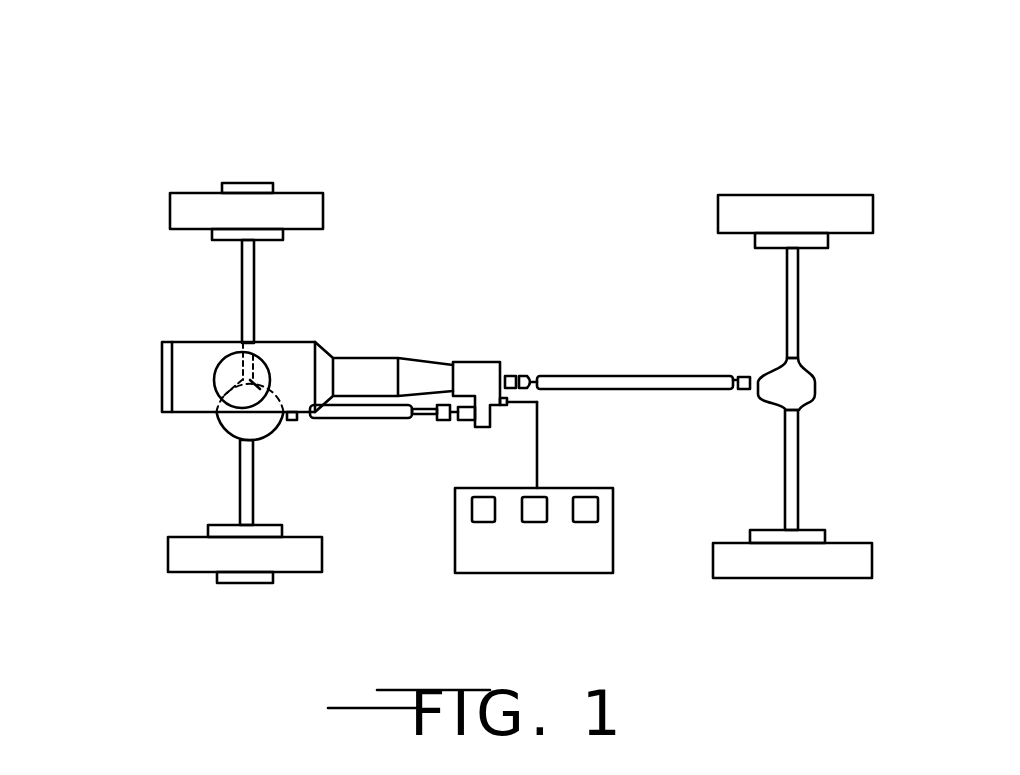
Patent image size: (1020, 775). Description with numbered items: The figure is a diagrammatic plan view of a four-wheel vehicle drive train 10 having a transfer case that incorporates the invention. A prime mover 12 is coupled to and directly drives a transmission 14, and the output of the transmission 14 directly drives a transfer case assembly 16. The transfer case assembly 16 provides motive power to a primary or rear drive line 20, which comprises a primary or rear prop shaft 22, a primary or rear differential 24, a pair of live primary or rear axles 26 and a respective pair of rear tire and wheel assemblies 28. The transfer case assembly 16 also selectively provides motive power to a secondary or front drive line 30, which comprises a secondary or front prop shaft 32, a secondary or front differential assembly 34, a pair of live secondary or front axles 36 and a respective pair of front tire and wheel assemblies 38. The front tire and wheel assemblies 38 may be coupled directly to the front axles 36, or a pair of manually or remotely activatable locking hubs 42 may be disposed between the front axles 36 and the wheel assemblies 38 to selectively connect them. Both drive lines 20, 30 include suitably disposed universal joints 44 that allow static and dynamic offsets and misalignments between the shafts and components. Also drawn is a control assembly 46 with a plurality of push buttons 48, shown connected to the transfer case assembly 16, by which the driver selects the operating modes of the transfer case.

The four-wheel vehicle drive train 10 is at (533, 59).
The prime mover 12 is at (196, 371).
The transmission 14 is at (384, 343).
The transfer case assembly 16 is at (472, 352).
The primary or rear drive line 20 is at (606, 209).
The primary or rear prop shaft 22 is at (635, 344).
The primary or rear differential 24 is at (837, 367).
The live primary or rear axles 26 is at (845, 389).
The primary or rear tire and wheel assemblies 28 is at (805, 378).
The secondary or front drive line 30 is at (87, 528).
The secondary or front prop shaft 32 is at (367, 450).
The secondary or front differential assembly 34 is at (204, 427).
The live secondary or front axles 36 is at (186, 382).
The secondary or front tire and wheel assemblies 38 is at (218, 372).
The locking hubs 42 is at (277, 385).
The universal joints 44 is at (569, 373).
The mode selector switch 46 is at (524, 527).
The selector buttons 48 is at (542, 473).